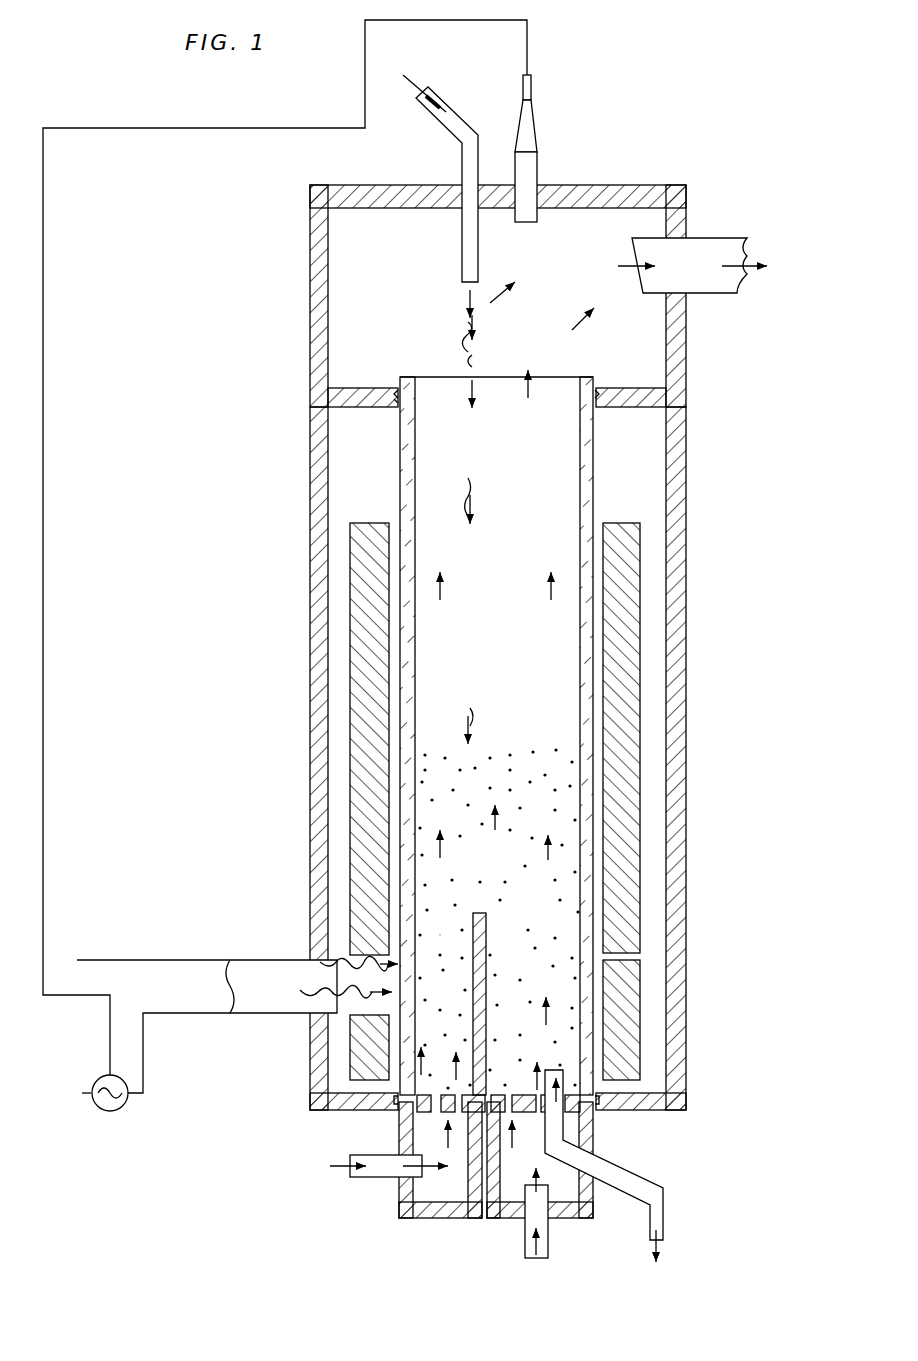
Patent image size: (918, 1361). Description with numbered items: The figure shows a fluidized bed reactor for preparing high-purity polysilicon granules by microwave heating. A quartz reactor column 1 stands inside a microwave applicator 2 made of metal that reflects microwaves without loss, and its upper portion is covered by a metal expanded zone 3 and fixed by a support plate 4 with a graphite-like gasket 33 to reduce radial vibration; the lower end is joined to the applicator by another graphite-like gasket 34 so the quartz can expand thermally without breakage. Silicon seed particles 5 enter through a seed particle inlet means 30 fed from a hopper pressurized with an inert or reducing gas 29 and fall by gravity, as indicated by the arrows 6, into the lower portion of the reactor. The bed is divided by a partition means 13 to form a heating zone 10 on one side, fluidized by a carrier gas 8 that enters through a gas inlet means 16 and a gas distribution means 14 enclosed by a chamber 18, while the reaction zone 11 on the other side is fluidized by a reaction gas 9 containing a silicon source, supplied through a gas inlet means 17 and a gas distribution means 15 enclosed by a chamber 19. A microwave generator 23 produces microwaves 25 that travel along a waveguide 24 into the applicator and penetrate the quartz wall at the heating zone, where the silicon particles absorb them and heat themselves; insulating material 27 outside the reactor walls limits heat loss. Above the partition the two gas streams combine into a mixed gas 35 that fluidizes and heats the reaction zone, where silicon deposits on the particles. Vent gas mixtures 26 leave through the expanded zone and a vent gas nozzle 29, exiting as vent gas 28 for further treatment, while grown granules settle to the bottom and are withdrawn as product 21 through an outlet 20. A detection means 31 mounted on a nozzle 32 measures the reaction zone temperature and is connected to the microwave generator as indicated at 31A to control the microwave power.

The quartz reactor column 1 is at (440, 663).
The microwave applicator 2 is at (310, 622).
The expanded zone 3 is at (310, 290).
The support plate 4 is at (345, 385).
The silicon seed particles 5 is at (484, 715).
The liquid flow direction 6 is at (466, 386).
The carrier gas 8 is at (338, 1160).
The reaction gas 9 is at (538, 1258).
The heating zone 10 is at (454, 953).
The reaction zone 11 is at (550, 907).
The partition means 13 is at (486, 928).
The gas distribution means 14 is at (433, 1134).
The gas distribution means 15 is at (530, 1096).
The gas inlet means 16 is at (390, 1176).
The gas inlet means 17 is at (525, 1240).
The chamber 18 is at (450, 1218).
The chamber 19 is at (568, 1218).
The outlet 20 is at (648, 1178).
The product 21 is at (662, 1252).
The microwave generator 23 is at (120, 1106).
The waveguide 24 is at (266, 1003).
The microwaves 25 is at (314, 997).
The vent gas mixtures 26 is at (580, 320).
The insulating material 27 is at (386, 523).
The vent gas mixture 28 is at (698, 275).
The vent gas nozzle 29 is at (412, 82).
The seed particle inlet means 30 is at (492, 105).
The detection means 31 is at (578, 109).
The connection to microwave generator 31A is at (43, 553).
The nozzle 32 is at (582, 181).
The graphite-like gasket 33 is at (397, 404).
The graphite-like gasket 34 is at (398, 1110).
The mixed gas 35 is at (548, 858).